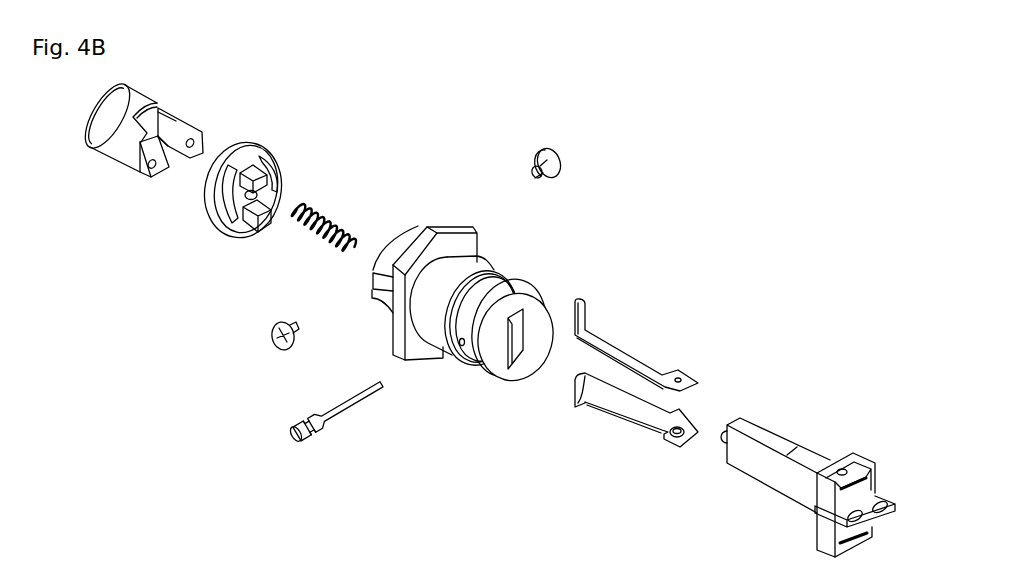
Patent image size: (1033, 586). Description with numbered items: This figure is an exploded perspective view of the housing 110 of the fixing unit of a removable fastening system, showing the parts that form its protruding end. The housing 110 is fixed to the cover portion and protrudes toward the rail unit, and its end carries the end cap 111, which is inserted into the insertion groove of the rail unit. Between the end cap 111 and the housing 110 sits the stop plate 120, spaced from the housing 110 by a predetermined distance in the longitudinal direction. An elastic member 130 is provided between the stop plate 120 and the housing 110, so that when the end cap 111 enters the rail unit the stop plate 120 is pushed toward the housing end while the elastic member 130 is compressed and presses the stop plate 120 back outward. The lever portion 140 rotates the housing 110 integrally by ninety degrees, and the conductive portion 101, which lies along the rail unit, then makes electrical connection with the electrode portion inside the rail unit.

The conductive portion 101 is at (630, 360).
The housing 110 is at (505, 373).
The end cap 111 is at (110, 150).
The stop plate 120 is at (215, 218).
The elastic member 130 is at (305, 215).
The lever portion 140 is at (348, 407).